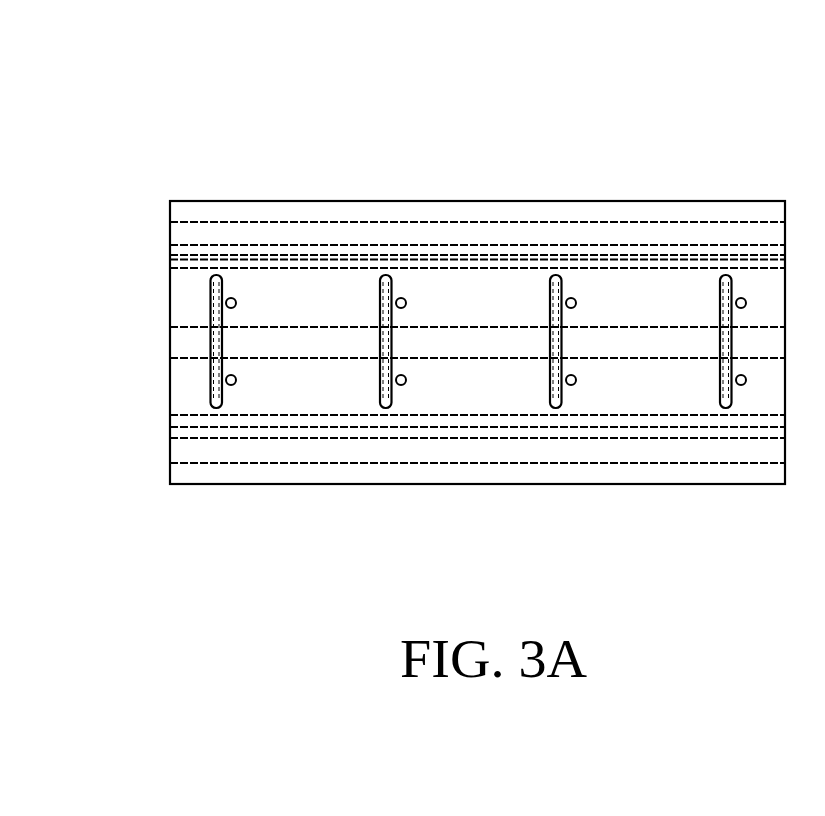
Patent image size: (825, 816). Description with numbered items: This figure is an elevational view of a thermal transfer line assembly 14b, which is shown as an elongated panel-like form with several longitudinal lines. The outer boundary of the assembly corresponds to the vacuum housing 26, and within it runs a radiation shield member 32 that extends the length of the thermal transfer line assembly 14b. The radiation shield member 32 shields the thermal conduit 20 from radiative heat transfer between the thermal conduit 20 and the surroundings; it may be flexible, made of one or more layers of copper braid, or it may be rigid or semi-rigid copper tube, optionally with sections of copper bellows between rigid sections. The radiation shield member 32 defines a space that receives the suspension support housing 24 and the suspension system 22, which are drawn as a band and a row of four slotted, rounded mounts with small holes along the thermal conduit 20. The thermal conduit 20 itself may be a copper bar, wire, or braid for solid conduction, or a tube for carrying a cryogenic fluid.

The thermal transfer line assembly 14b is at (317, 118).
The vacuum housing 26 is at (360, 201).
The radiation shield member 32 is at (487, 245).
The suspension support housing 24 is at (575, 260).
The thermal conduit 20 is at (645, 325).
The suspension system 22 is at (381, 400).